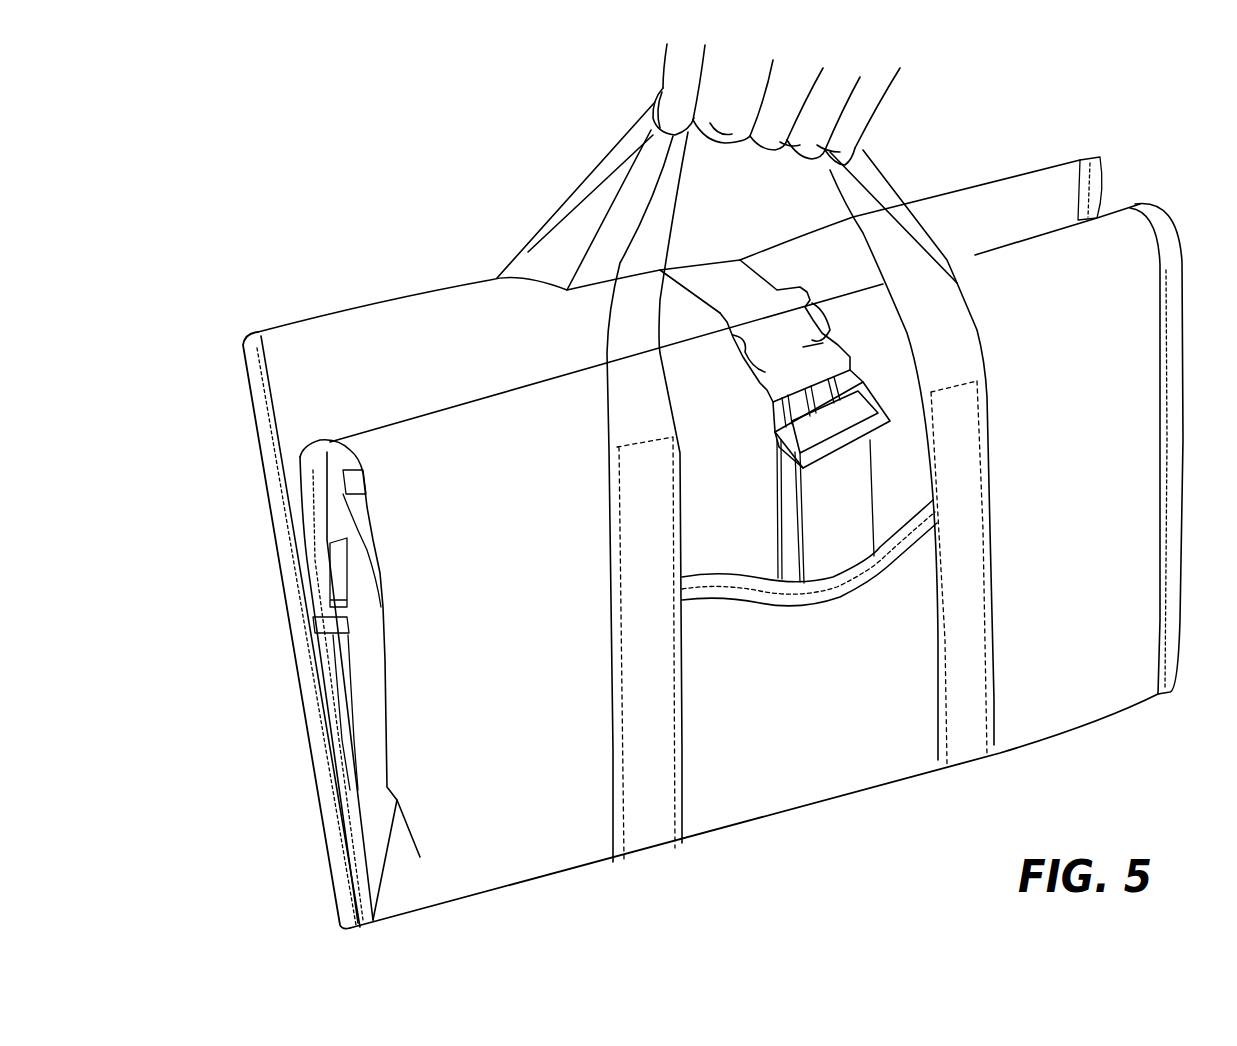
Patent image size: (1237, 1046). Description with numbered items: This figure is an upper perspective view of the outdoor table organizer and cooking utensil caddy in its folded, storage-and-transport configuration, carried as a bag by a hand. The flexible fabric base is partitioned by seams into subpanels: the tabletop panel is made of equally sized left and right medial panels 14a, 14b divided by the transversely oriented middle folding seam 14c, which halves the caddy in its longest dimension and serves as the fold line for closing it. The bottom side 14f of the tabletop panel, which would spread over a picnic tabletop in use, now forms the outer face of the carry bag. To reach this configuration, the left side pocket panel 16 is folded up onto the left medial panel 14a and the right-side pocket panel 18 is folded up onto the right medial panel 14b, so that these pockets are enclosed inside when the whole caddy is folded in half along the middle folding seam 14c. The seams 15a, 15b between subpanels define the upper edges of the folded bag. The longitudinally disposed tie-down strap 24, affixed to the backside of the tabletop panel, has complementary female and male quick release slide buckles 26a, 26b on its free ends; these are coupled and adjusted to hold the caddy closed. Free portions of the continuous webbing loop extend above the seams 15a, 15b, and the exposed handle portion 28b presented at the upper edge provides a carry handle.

The left medial panel 14a is at (243, 346).
The right medial panel 14b is at (410, 640).
The middle folding seam 14c is at (480, 907).
The bottom side 14f is at (747, 773).
The seam 15a is at (380, 303).
The seam 15b is at (1043, 227).
The left side pocket panel 16 is at (290, 363).
The right-side pocket panel 18 is at (370, 773).
The tie-down strap 24 is at (820, 553).
The female quick release slide buckle 26a is at (870, 407).
The male quick release slide buckle 26b is at (810, 345).
The right handle portion 28b is at (610, 152).